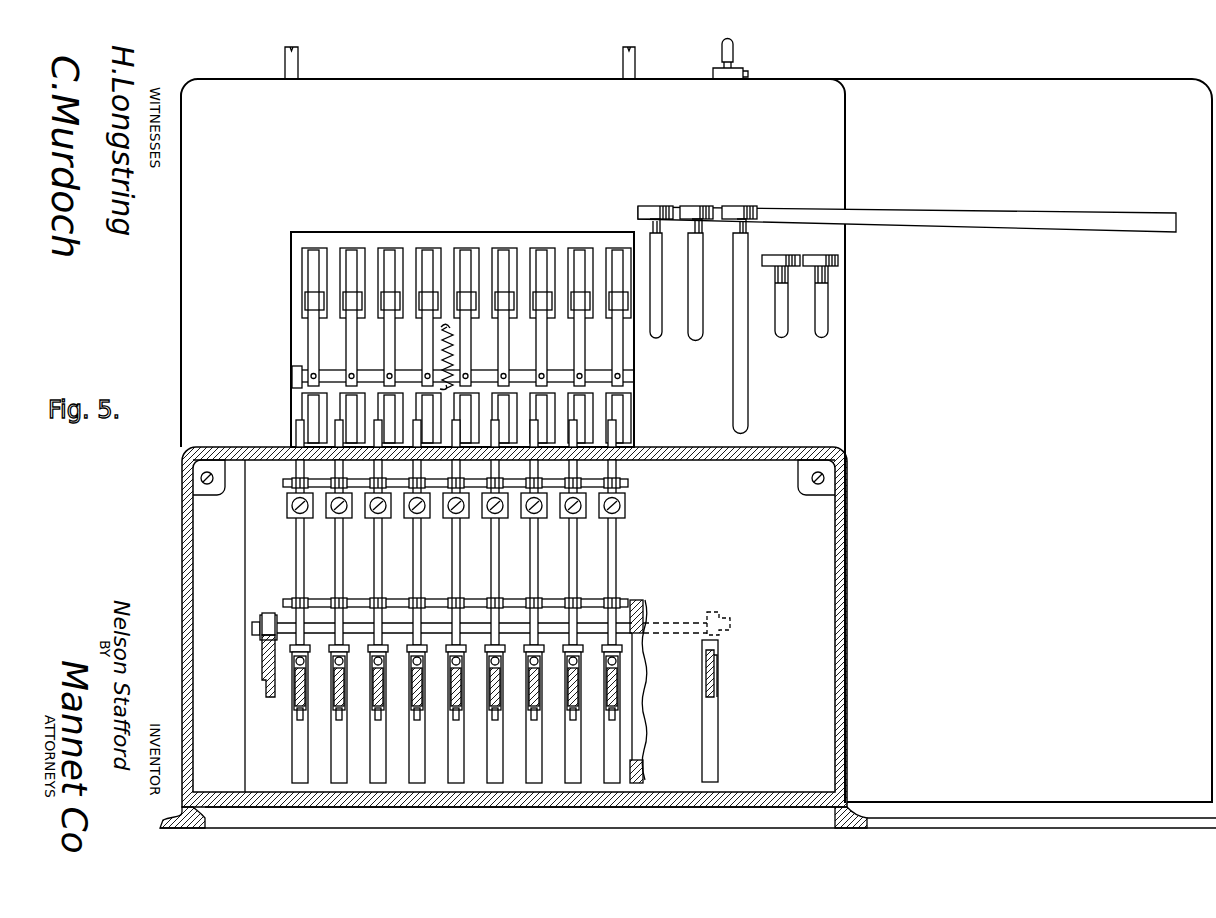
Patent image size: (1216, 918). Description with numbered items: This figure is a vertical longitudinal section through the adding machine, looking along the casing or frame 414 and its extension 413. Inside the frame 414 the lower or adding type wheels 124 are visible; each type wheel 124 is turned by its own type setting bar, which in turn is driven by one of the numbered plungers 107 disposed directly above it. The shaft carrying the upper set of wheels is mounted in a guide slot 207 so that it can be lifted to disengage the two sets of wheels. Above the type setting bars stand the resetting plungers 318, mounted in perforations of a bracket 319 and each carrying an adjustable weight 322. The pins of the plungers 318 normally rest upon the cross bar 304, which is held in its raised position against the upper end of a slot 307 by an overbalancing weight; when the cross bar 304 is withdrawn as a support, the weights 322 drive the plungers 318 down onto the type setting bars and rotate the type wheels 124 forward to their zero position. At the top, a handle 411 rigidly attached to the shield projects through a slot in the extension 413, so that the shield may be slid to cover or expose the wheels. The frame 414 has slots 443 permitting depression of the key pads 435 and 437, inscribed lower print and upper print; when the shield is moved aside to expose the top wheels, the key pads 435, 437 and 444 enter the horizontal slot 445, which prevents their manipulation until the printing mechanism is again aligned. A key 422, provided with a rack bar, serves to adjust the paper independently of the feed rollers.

The casing or frame 414 is at (805, 93).
The extension 413 is at (1063, 95).
The handle 411 is at (721, 53).
The guide slot 207 is at (543, 249).
The type wheel 124 is at (626, 408).
The horizontal slot 445 is at (1025, 223).
The key pad 435 is at (655, 206).
The key pad 437 is at (699, 206).
The key pad 444 is at (745, 206).
The slots 443 is at (694, 323).
The slot 307 is at (780, 258).
The key 422 is at (840, 262).
The cross bar 304 is at (641, 623).
The resetting plunger 318 is at (295, 557).
The bracket 319 is at (629, 483).
The weight 322 is at (627, 501).
The plunger 107 is at (296, 700).